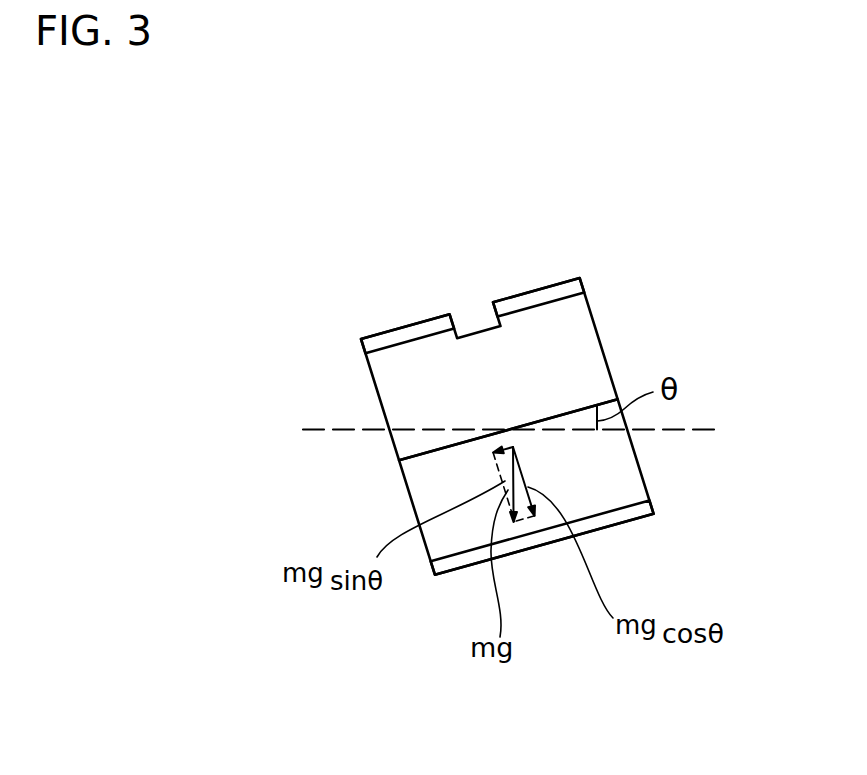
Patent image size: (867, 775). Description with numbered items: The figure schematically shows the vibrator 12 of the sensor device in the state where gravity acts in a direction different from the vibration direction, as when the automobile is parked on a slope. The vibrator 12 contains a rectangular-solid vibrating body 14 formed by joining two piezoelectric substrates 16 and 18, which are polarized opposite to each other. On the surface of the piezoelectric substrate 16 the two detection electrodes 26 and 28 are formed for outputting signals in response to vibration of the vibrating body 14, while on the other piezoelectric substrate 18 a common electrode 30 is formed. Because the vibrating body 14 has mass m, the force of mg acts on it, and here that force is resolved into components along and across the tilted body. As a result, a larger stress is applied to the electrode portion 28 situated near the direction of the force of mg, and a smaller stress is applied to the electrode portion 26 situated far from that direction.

The vibrator 12 is at (280, 135).
The vibrating body 14 is at (247, 458).
The piezoelectric substrate 16 is at (395, 401).
The piezoelectric substrate 18 is at (420, 488).
The electrode 26 is at (402, 333).
The electrode 28 is at (538, 297).
The common electrode 30 is at (627, 515).